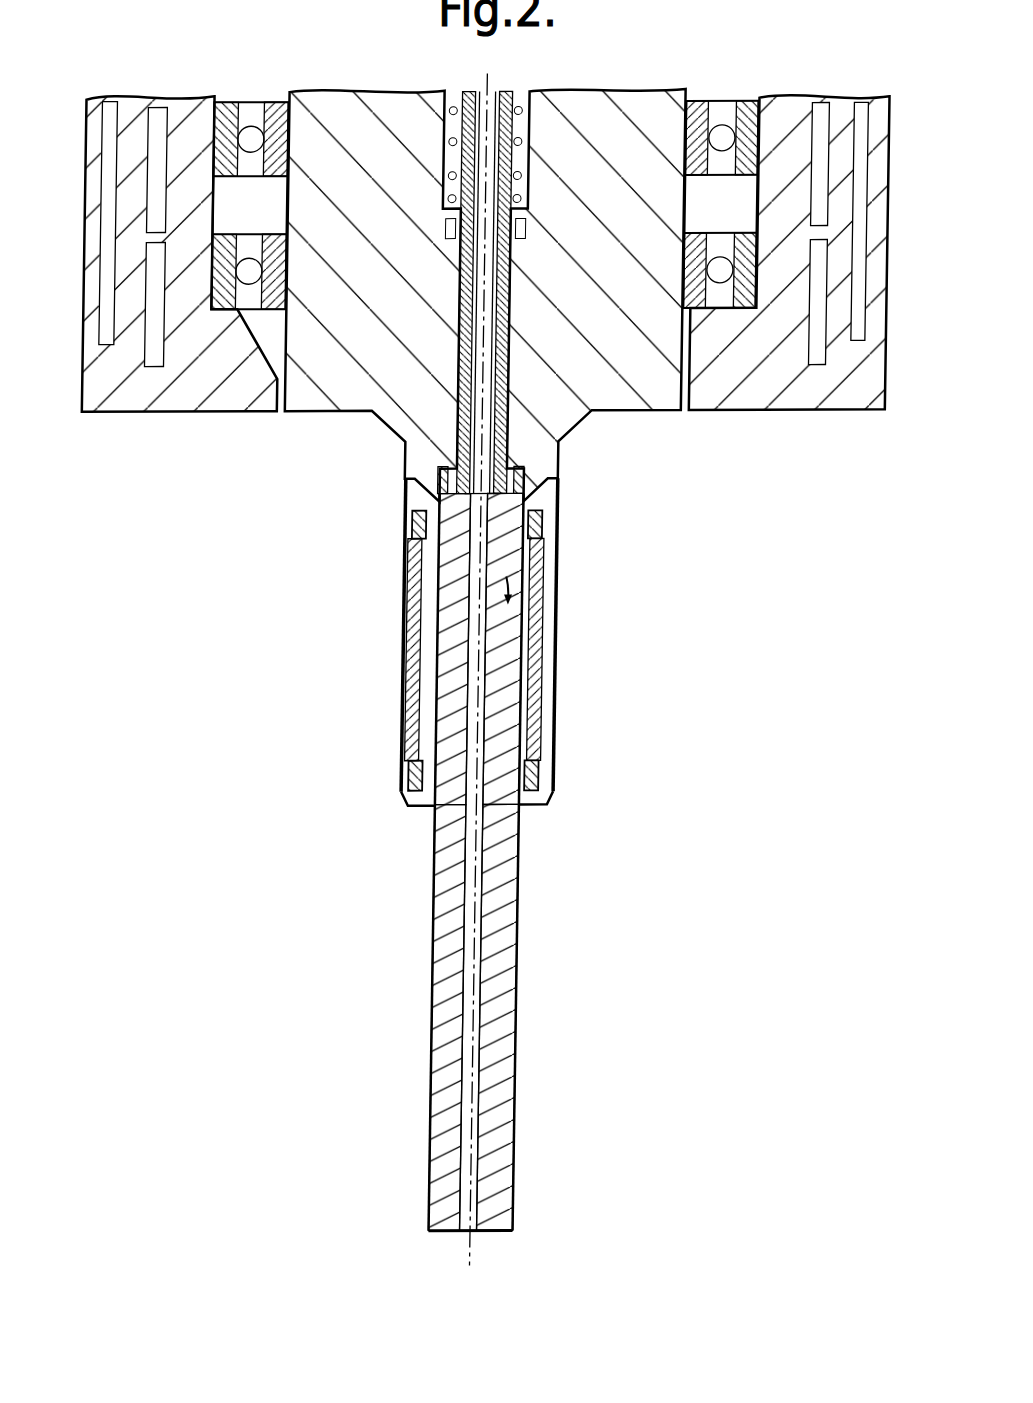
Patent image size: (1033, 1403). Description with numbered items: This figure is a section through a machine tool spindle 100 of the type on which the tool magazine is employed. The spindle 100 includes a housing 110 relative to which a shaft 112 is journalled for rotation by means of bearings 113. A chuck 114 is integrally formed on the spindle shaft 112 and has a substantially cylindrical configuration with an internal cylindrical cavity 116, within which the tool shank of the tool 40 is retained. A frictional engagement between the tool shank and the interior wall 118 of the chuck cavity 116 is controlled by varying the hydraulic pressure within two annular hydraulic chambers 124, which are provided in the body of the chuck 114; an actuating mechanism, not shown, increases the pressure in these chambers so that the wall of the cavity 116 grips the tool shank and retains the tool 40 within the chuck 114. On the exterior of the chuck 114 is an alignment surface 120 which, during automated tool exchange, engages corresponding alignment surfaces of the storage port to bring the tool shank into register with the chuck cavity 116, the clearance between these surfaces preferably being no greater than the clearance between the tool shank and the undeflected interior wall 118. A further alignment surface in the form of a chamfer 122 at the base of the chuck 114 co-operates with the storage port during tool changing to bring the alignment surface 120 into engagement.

The tool 40 is at (558, 995).
The spindle 100 is at (72, 354).
The housing 110 is at (802, 397).
The shaft 112 is at (618, 382).
The bearings 113 is at (727, 303).
The chuck 114 is at (507, 686).
The internal cylindrical cavity 116 is at (529, 621).
The interior wall 118 is at (455, 670).
The alignment surface 120 is at (568, 732).
The chamfer 122 is at (545, 808).
The annular hydraulic chambers 124 is at (423, 523).